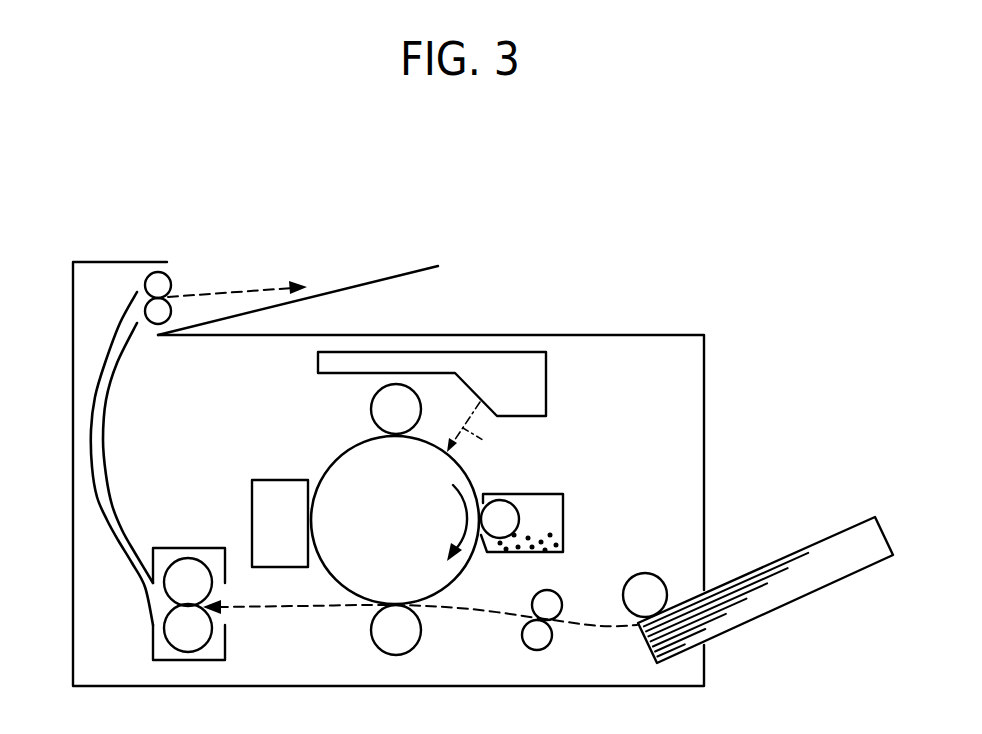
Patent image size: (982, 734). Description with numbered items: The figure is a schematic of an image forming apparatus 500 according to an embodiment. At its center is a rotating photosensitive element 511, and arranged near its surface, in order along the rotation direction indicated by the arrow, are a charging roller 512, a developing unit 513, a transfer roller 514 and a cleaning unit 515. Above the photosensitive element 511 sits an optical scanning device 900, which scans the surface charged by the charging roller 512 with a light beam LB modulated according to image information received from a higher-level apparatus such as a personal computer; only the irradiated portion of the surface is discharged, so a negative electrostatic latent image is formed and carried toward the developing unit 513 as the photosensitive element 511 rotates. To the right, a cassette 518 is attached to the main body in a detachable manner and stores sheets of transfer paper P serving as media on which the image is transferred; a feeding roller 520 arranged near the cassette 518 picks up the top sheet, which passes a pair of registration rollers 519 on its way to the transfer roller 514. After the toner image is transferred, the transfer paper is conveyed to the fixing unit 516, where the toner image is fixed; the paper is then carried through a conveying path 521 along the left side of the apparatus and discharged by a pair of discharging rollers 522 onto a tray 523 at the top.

The image forming apparatus 500 is at (519, 264).
The photosensitive element 511 is at (462, 578).
The charging roller 512 is at (372, 410).
The developing unit 513 is at (543, 494).
The transfer roller 514 is at (418, 645).
The cleaning unit 515 is at (272, 480).
The fixing unit 516 is at (188, 548).
The cassette 518 is at (780, 605).
The pair of registration rollers 519 is at (560, 596).
The feeding roller 520 is at (652, 574).
The conveying path 521 is at (92, 468).
The pair of discharging rollers 522 is at (172, 284).
The tray 523 is at (357, 287).
The optical scanning device 900 is at (547, 385).
The light beam LB is at (475, 438).
The transfer paper P is at (783, 563).